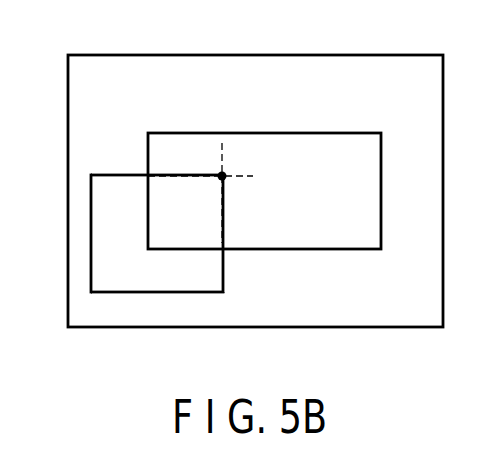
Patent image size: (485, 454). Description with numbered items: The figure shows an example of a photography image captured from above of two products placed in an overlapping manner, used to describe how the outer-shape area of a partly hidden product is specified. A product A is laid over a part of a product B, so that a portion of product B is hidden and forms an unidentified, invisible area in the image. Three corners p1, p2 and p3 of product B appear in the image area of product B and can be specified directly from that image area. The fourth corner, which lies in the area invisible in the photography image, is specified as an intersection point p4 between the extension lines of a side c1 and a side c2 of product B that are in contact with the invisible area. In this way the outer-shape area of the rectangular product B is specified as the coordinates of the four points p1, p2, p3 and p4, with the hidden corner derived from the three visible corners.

The product A is at (156, 144).
The product B is at (98, 253).
The side c1 is at (118, 175).
The side c2 is at (223, 272).
The corner p1 is at (91, 175).
The corner p2 is at (91, 292).
The corner p3 is at (223, 292).
The intersection point p4 is at (222, 176).